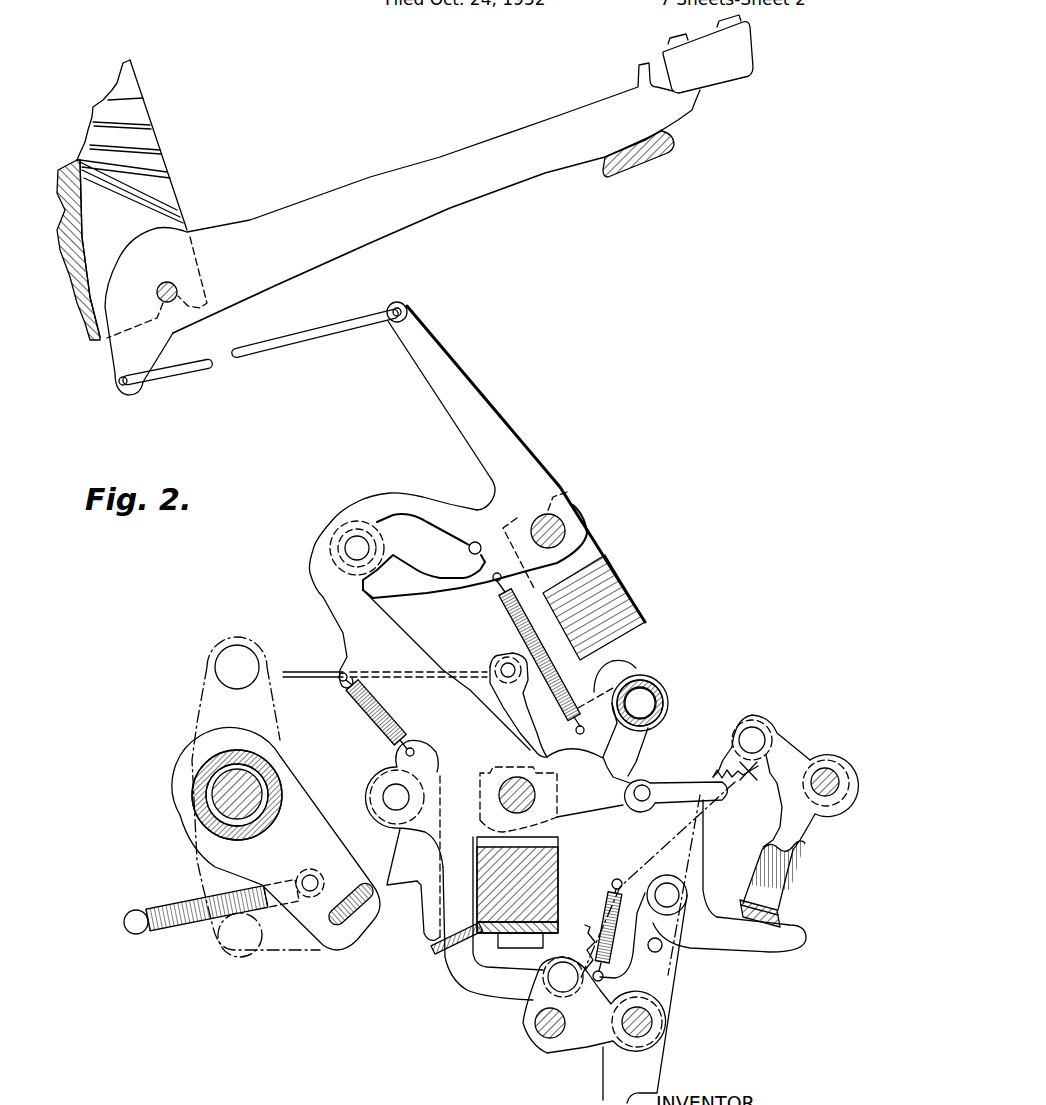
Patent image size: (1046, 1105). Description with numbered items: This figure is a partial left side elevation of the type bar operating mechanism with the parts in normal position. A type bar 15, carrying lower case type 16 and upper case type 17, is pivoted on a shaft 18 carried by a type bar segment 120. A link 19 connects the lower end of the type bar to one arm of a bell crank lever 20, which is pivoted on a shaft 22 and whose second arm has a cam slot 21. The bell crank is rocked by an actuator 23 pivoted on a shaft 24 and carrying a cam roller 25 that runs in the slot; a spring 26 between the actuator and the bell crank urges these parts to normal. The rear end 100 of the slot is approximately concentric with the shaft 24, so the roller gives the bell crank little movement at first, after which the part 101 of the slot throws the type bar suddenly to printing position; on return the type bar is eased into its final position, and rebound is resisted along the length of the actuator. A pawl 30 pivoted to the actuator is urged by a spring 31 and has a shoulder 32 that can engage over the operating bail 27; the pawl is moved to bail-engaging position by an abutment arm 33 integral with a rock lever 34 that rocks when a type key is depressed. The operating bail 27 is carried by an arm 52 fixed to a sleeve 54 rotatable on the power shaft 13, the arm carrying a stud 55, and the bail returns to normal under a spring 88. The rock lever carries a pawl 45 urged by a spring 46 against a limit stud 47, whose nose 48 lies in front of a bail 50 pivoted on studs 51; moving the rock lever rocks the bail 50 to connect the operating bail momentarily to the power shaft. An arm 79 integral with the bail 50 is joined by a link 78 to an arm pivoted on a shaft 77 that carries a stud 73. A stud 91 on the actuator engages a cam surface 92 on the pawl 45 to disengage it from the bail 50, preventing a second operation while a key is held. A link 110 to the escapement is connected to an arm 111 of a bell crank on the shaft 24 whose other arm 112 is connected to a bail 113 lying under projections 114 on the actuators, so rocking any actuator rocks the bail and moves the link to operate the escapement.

The power shaft 13 is at (258, 804).
The type bar 15 is at (402, 229).
The lower case type 16 is at (658, 31).
The upper case type 17 is at (724, 54).
The shaft 18 is at (165, 279).
The link 19 is at (259, 347).
The bell crank lever 20 is at (516, 481).
The cam slot 21 is at (397, 545).
The shaft 22 is at (561, 541).
The actuator 23 is at (466, 752).
The shaft 24 is at (518, 794).
The cam roller 25 is at (355, 579).
The spring 26 is at (524, 653).
The operating bail 27 is at (351, 898).
The pawl 30 is at (404, 803).
The spring 31 is at (374, 714).
The shoulder 32 is at (412, 857).
The abutment arm 33 is at (450, 954).
The rock lever 34 is at (647, 999).
The pawl 45 is at (667, 889).
The spring 46 is at (595, 924).
The limit stud 47 is at (647, 960).
The nose 48 is at (744, 931).
The bail 50 is at (780, 905).
The studs 51 is at (830, 767).
The arm 52 is at (276, 838).
The sleeve 54 is at (237, 779).
The stud 55 is at (256, 779).
The stud 73 is at (537, 1036).
The shaft 77 is at (614, 1005).
The link 78 is at (664, 866).
The arm 79 is at (785, 810).
The spring 88 is at (224, 896).
The stud 91 is at (676, 785).
The cam surface 92 is at (657, 881).
The rear end of slot 100 is at (334, 539).
The part of slot 101 is at (482, 530).
The link 110 is at (385, 686).
The arm 111 is at (533, 705).
The arm 112 is at (637, 743).
The bail 113 is at (663, 700).
The projections 114 is at (619, 672).
The type bar segment 120 is at (140, 200).